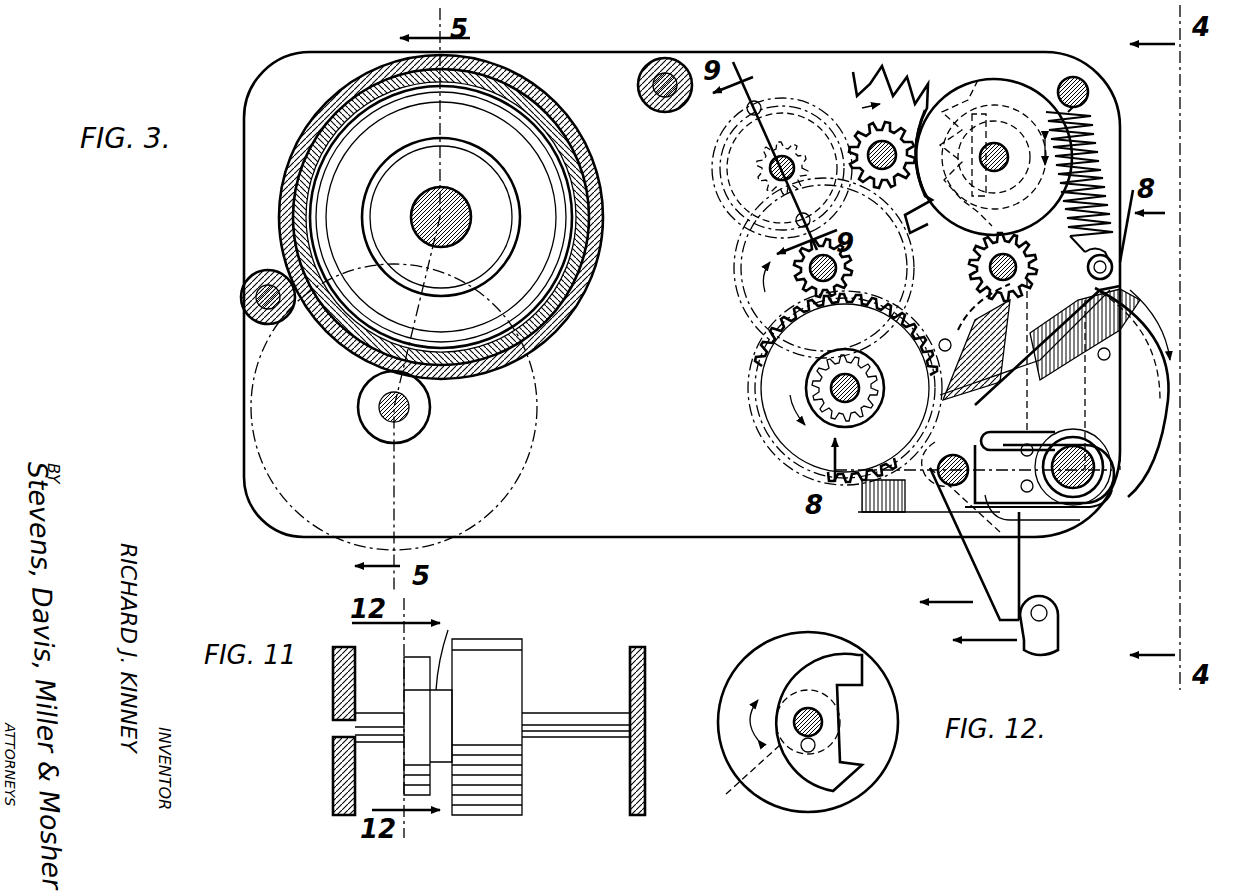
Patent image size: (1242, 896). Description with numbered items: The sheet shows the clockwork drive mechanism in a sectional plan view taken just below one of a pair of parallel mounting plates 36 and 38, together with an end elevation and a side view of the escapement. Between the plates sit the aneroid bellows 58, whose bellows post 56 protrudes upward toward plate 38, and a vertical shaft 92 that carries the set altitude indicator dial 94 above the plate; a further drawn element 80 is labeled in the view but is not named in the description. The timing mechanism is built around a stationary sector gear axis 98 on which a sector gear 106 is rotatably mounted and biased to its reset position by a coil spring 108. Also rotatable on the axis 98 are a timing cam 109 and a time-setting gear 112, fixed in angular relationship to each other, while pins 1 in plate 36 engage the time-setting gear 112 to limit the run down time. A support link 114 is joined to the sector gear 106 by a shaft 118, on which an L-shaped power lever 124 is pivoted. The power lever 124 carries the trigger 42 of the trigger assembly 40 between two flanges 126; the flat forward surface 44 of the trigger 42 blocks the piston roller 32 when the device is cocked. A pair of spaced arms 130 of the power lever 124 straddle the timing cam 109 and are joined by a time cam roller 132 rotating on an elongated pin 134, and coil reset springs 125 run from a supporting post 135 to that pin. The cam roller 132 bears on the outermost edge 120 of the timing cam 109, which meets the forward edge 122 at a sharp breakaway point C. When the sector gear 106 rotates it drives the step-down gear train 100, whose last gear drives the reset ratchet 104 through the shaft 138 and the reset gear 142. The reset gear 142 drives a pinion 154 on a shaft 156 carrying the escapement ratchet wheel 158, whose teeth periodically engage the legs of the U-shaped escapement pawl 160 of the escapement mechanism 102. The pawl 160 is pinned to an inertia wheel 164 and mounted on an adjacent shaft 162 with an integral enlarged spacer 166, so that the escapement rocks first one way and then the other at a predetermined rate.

In FIG. 3, the pins 1 is at (944, 338).
In FIG. 3, the piston roller 32 is at (1062, 618).
In FIG. 3, the mounting plate 36 is at (570, 63).
In FIG. 11, the mounting plate 36 is at (333, 686).
In FIG. 11, the mounting plate 38 is at (646, 686).
In FIG. 3, the trigger assembly 40 is at (966, 563).
In FIG. 3, the trigger 42 is at (998, 606).
In FIG. 3, the flat forward surface 44 is at (1021, 553).
In FIG. 3, the bellows post 56 is at (450, 205).
In FIG. 3, the aneroid bellows 58 is at (340, 94).
In FIG. 3, the link 80 is at (945, 480).
In FIG. 3, the vertical shaft 92 is at (380, 412).
In FIG. 3, the set altitude indicator dial 94 is at (520, 428).
In FIG. 3, the sector gear axis 98 is at (1102, 507).
In FIG. 3, the gear train 100 is at (742, 311).
In FIG. 3, the escapement mechanism 102 is at (1008, 76).
In FIG. 11, the escapement mechanism 102 is at (505, 634).
In FIG. 3, the reset ratchet 104 is at (774, 88).
In FIG. 3, the sector gear 106 is at (874, 514).
In FIG. 3, the coil spring 108 is at (1092, 525).
In FIG. 3, the timing cam 109 is at (1150, 388).
In FIG. 3, the time-setting gear 112 is at (1090, 408).
In FIG. 3, the support link 114 is at (1012, 406).
In FIG. 3, the shaft 118 is at (921, 393).
In FIG. 3, the outermost edge 120 is at (1140, 292).
In FIG. 3, the forward edge 122 is at (1166, 356).
In FIG. 3, the power lever 124 is at (990, 328).
In FIG. 3, the coil reset springs 125 is at (1100, 160).
In FIG. 3, the flanges 126 is at (948, 490).
In FIG. 3, the spaced arms 130 is at (1082, 281).
In FIG. 3, the time cam roller 132 is at (1113, 267).
In FIG. 3, the elongated pin 134 is at (1108, 254).
In FIG. 3, the supporting post 135 is at (1090, 92).
In FIG. 3, the shaft 138 is at (774, 158).
In FIG. 3, the reset gear 142 is at (712, 163).
In FIG. 3, the pinion 154 is at (904, 142).
In FIG. 3, the shaft 156 is at (866, 134).
In FIG. 3, the escapement ratchet wheel 158 is at (896, 88).
In FIG. 3, the escapement pawl 160 is at (986, 92).
In FIG. 11, the escapement pawl 160 is at (402, 762).
In FIG. 12, the escapement pawl 160 is at (830, 655).
In FIG. 11, the shaft 162 is at (570, 712).
In FIG. 12, the shaft 162 is at (822, 722).
In FIG. 3, the inertia wheel 164 is at (1046, 76).
In FIG. 11, the inertia wheel 164 is at (524, 660).
In FIG. 12, the inertia wheel 164 is at (780, 640).
In FIG. 11, the spacer 166 is at (440, 640).
In FIG. 12, the spacer 166 is at (740, 781).
In FIG. 3, the breakaway point C is at (1142, 297).